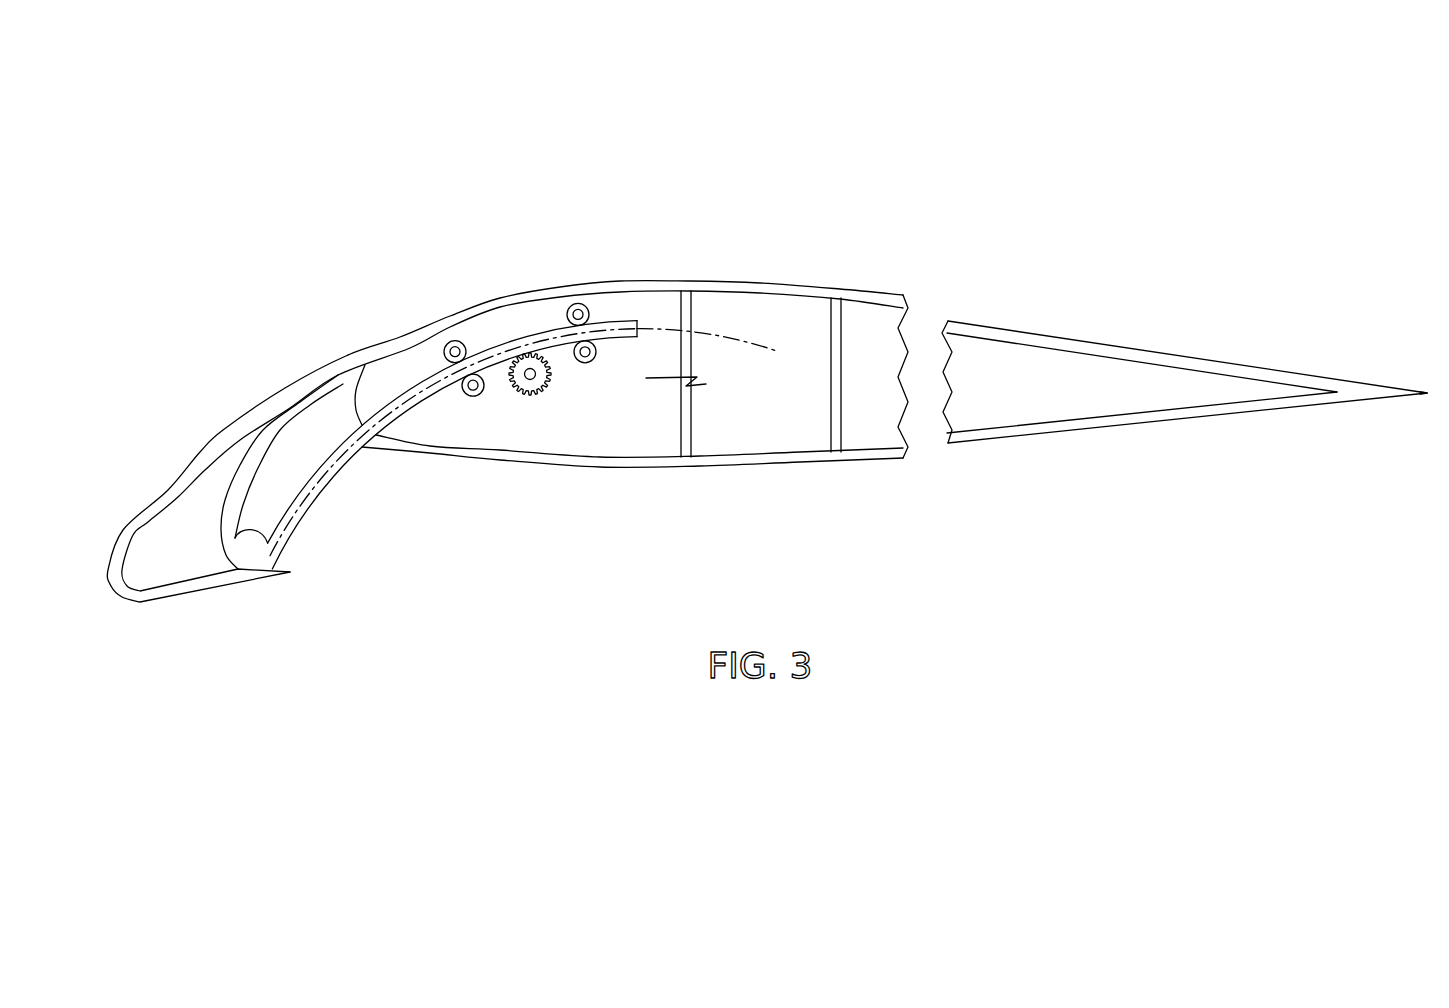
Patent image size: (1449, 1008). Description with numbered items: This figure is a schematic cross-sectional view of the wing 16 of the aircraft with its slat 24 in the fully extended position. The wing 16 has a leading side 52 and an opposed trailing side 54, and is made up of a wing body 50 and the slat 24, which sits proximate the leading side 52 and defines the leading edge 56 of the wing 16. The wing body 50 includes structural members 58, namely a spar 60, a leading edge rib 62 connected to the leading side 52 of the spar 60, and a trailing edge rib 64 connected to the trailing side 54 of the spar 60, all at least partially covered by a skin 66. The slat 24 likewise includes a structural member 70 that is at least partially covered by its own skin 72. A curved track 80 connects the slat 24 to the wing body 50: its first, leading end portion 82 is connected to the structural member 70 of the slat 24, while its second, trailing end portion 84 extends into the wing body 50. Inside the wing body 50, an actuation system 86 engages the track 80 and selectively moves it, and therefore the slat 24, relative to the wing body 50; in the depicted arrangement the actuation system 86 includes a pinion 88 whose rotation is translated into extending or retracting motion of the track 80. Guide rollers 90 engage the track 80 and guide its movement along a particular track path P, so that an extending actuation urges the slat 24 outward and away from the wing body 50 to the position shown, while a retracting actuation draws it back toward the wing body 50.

The wing 16 is at (1123, 290).
The slat 24 is at (255, 412).
The wing body 50 is at (846, 287).
The leading side 52 is at (137, 622).
The trailing side 54 is at (1425, 412).
The leading edge 56 is at (115, 596).
The structural members 58 is at (632, 460).
The spar 60 is at (759, 305).
The leading edge rib 62 is at (626, 300).
The trailing edge rib 64 is at (1165, 378).
The skin 66 is at (1020, 330).
The structural member 70 is at (196, 581).
The skin 72 is at (162, 492).
The track 80 is at (312, 496).
The first end portion 82 is at (315, 583).
The second end portion 84 is at (643, 317).
The actuation system 86 is at (689, 385).
The pinion 88 is at (541, 394).
The guide rollers 90 is at (448, 340).
The track path P is at (338, 477).